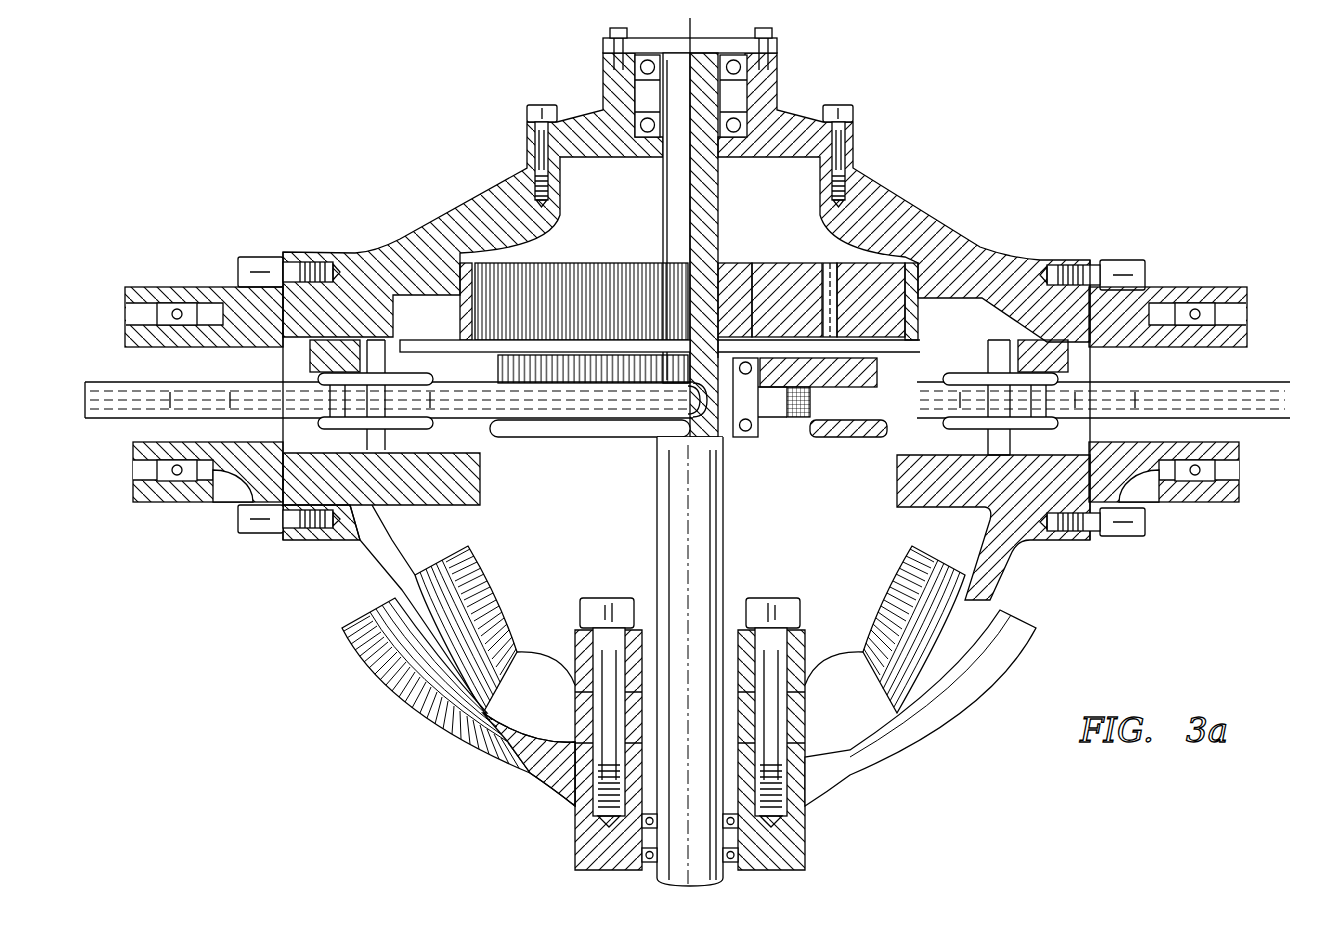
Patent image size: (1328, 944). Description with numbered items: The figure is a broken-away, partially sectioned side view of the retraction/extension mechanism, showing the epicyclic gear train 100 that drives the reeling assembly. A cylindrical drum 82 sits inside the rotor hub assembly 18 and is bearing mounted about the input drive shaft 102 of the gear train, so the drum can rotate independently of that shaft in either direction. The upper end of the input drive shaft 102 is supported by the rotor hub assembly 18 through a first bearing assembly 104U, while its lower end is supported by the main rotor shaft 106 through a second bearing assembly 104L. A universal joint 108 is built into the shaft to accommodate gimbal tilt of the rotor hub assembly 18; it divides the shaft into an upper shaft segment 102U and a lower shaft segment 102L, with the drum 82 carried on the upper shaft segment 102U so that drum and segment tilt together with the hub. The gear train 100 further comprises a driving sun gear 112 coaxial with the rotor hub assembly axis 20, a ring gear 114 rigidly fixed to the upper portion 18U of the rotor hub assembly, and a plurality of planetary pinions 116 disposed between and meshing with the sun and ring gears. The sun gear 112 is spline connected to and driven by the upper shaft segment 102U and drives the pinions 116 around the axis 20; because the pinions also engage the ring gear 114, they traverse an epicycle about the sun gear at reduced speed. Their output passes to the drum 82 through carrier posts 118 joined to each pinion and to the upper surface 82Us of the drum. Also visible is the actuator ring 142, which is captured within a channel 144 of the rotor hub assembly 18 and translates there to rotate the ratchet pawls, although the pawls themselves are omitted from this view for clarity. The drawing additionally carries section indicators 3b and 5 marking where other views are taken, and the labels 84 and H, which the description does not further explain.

The rotor hub assembly axis 20 is at (693, 36).
The upper portion of the rotor hub assembly 18U is at (868, 185).
The rotor hub assembly 18 is at (1010, 568).
The first bearing assembly 104U is at (752, 122).
The second bearing assembly 104L is at (640, 846).
The upper shaft segment 102U is at (668, 212).
The lower shaft segment 102L is at (660, 566).
The input drive shaft 102 is at (718, 430).
The epicyclic gear train 100 is at (632, 238).
The driving sun gear 112 is at (735, 268).
The planetary pinions 116 is at (797, 275).
The ring gear 114 is at (908, 262).
The carrier posts 118 is at (855, 275).
The section line 3b is at (393, 290).
The cylindrical drum 82 is at (845, 440).
The upper surface of the cylindrical drum 82Us is at (990, 345).
The drive shaft 84 is at (1160, 392).
The universal joint 108 is at (708, 447).
The coupling 5 is at (313, 362).
The actuator ring 142 is at (345, 348).
The channel 144 is at (333, 348).
The main rotor shaft 106 is at (800, 848).
The shaft height dimension H is at (1310, 362).